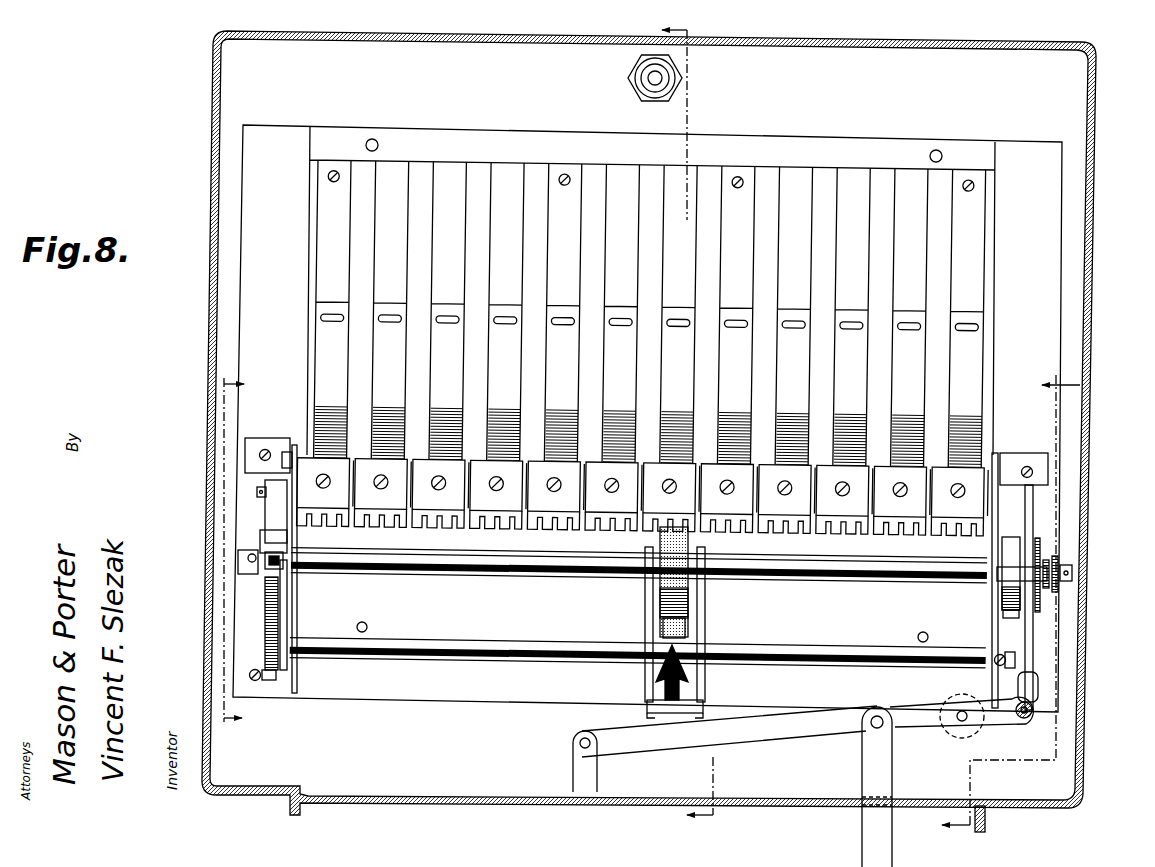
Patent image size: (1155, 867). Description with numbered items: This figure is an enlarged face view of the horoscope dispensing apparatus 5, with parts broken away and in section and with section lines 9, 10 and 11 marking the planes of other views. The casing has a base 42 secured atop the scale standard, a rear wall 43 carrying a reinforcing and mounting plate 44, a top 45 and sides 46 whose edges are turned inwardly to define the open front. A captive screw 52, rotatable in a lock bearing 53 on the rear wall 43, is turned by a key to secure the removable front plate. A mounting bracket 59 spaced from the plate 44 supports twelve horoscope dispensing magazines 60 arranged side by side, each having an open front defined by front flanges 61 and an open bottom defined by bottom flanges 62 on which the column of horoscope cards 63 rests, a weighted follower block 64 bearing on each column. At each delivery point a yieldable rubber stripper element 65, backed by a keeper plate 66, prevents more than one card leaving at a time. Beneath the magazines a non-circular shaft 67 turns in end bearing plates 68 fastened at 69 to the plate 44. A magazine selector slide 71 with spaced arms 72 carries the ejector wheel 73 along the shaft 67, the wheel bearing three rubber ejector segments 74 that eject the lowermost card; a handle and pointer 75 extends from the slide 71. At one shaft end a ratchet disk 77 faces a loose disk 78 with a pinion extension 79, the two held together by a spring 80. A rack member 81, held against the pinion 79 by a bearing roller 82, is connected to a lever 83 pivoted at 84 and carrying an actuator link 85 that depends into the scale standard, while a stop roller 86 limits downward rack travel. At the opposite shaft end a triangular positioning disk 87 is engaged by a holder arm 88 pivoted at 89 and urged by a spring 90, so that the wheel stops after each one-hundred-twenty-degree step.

The horoscope dispensing apparatus 5 is at (1094, 231).
The section line 9- 9 is at (672, 423).
The section line 10- 10 is at (229, 556).
The section line 11- 11 is at (995, 593).
The base 42 is at (437, 796).
The rear wall 43 is at (1068, 136).
The reinforcing and mounting plate 44 is at (1061, 316).
The top 45 is at (437, 41).
The sides 46 is at (1086, 401).
The captive screw 52 is at (640, 86).
The lock bearing 53 is at (628, 73).
The mounting bracket 59 is at (963, 150).
The horoscope dispensing magazines 60 is at (502, 159).
The front flanges 61 is at (410, 180).
The bottom flanges 62 is at (427, 527).
The horoscope cards 63 is at (327, 418).
The weighted follower block 64 is at (393, 340).
The stripper element 65 is at (508, 517).
The keeper plate 66 is at (518, 500).
The non-circular shaft 67 is at (400, 567).
The end bearing plates 68 is at (294, 622).
The securing means 69 is at (259, 454).
The magazine selector slide 71 is at (643, 663).
The spaced arms 72 is at (686, 628).
The ejector wheel 73 is at (660, 600).
The rubber ejector segments 74 is at (689, 589).
The handle and magazine selecting pointer 75 is at (676, 650).
The ratchet disk 77 is at (1005, 600).
The ratchet disk 78 is at (1017, 616).
The pinion extension 79 is at (1040, 548).
The spring 80 is at (1063, 583).
The rack member 81 is at (1030, 520).
The bearing roller 82 is at (1058, 571).
The lever 83 is at (818, 736).
The pivot 84 is at (566, 745).
The actuator link 85 is at (872, 759).
The stop roller 86 is at (960, 700).
The positioning disk 87 is at (265, 577).
The holder arm 88 is at (265, 515).
The pivot 89 is at (254, 491).
The spring 90 is at (270, 607).